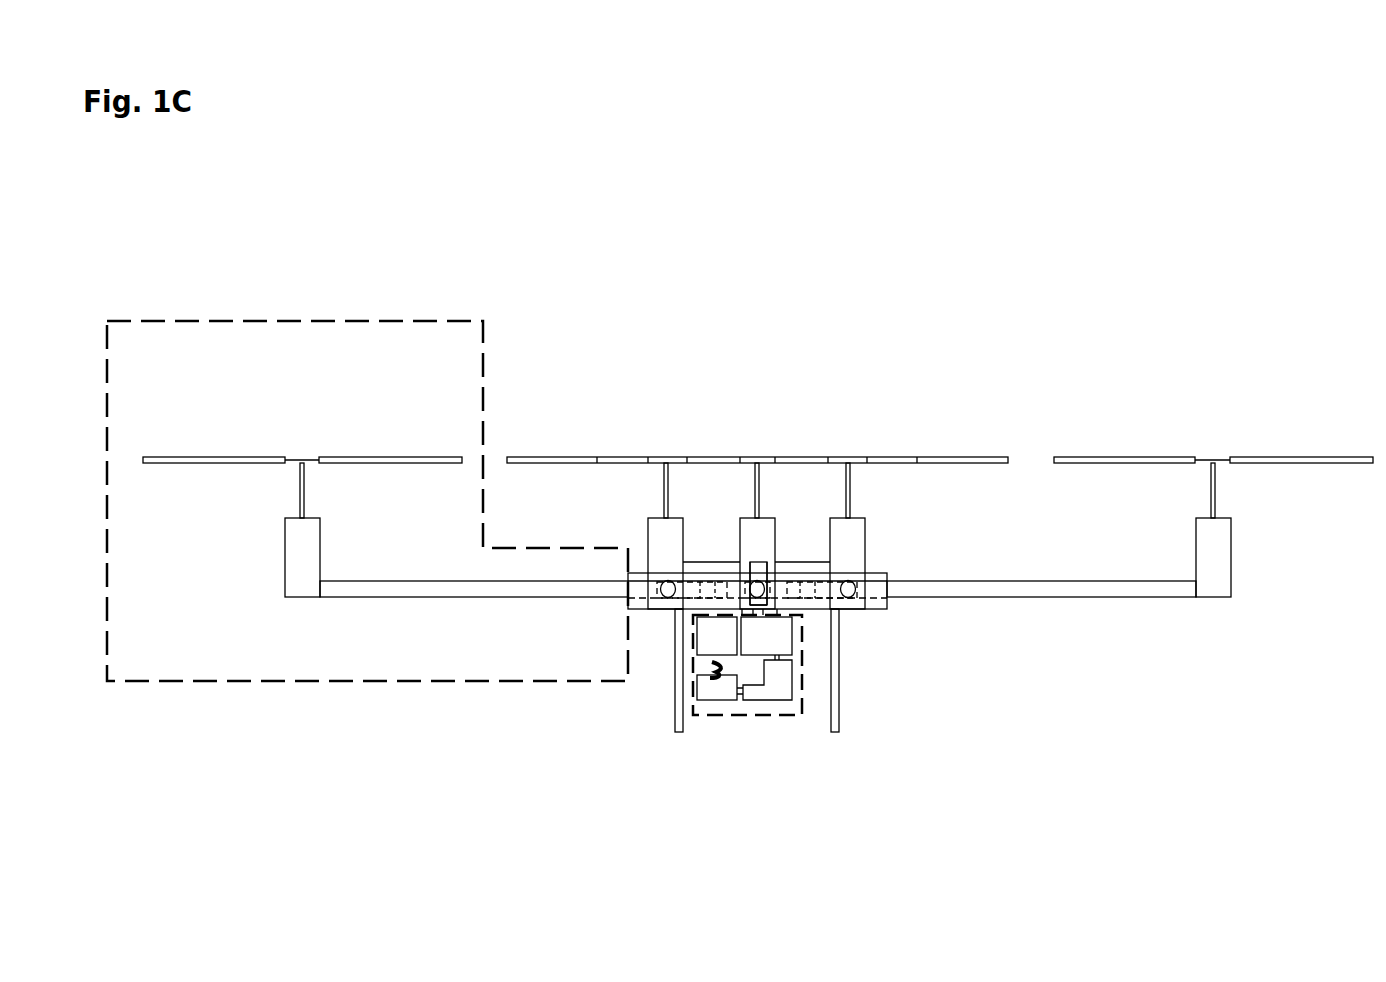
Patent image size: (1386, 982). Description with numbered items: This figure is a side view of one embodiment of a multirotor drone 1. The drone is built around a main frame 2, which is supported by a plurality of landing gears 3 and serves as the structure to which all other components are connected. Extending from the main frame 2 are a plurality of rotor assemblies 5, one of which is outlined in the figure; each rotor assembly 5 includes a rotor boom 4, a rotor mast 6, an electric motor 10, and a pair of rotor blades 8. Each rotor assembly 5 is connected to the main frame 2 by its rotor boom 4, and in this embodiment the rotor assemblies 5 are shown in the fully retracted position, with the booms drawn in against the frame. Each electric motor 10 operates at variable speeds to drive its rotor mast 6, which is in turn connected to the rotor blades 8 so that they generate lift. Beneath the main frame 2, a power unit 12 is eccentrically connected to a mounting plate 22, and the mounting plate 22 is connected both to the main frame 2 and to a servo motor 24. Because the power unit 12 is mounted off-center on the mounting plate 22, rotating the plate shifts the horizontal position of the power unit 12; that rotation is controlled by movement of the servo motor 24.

The multirotor drone 1 is at (1156, 228).
The main frame 2 is at (885, 605).
The landing gear 3 is at (672, 690).
The rotor boom 4 is at (430, 597).
The rotor assembly 5 is at (275, 683).
The rotor mast 6 is at (300, 487).
The rotor blades 8 is at (200, 455).
The electric motor 10 is at (288, 581).
The power unit 12 is at (758, 715).
The mounting plate 22 is at (800, 615).
The servo motor 24 is at (748, 562).